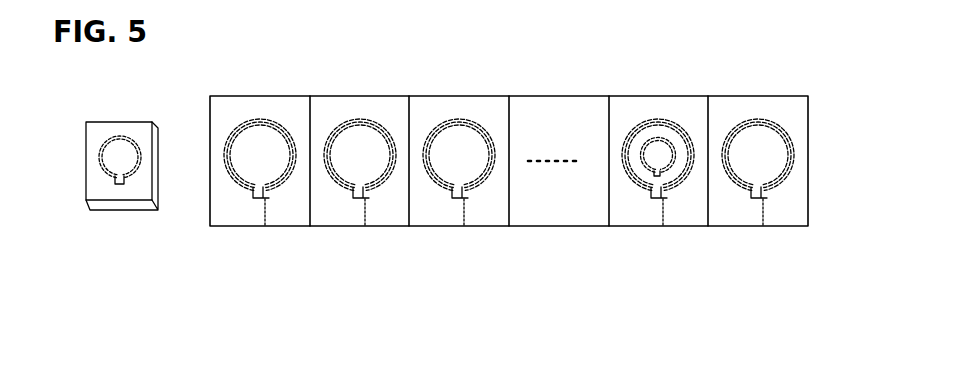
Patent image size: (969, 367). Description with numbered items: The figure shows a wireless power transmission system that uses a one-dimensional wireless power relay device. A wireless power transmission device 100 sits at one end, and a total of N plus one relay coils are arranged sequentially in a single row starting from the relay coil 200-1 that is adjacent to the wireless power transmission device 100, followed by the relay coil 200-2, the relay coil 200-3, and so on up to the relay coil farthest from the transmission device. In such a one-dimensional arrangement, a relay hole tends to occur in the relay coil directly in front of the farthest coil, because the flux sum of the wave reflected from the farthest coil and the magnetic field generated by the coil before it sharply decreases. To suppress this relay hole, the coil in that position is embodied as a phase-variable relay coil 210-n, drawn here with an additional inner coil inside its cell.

The wireless power transmission device 100 is at (122, 210).
The relay coil 200-1 is at (265, 226).
The relay coil 200-2 is at (365, 226).
The relay coil 200-3 is at (464, 226).
The phase-variable relay coil 210-n is at (663, 226).